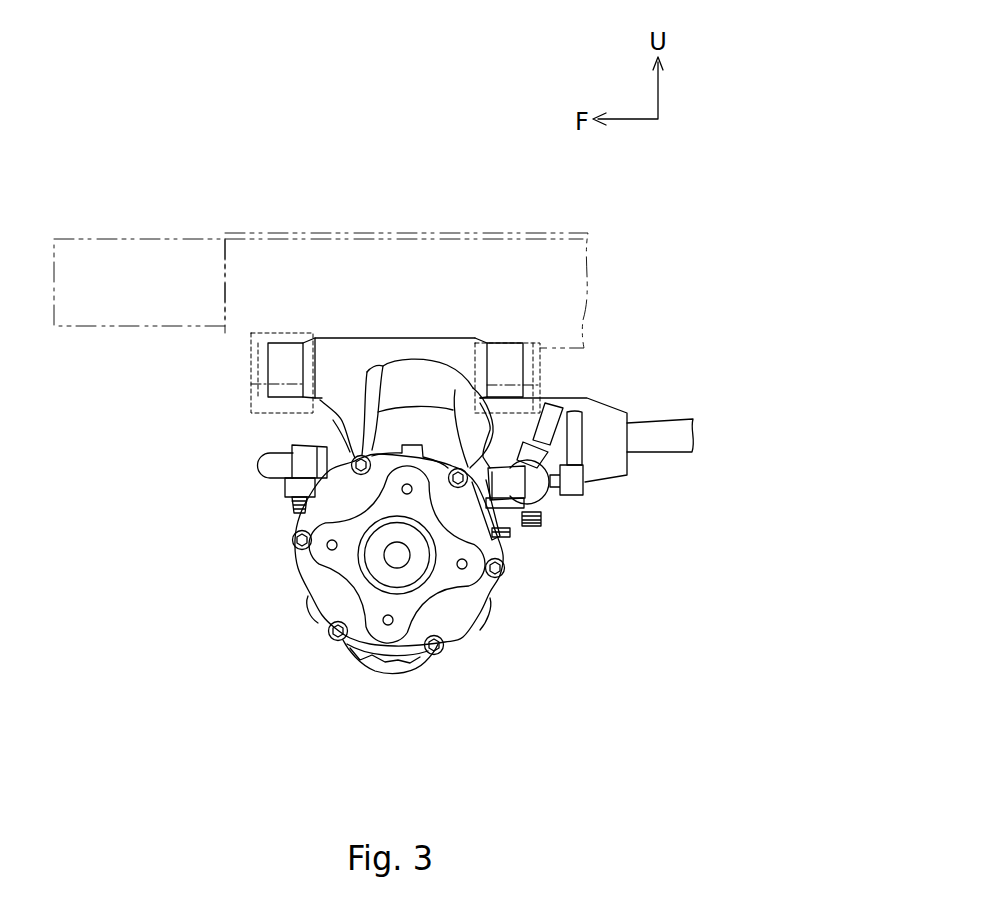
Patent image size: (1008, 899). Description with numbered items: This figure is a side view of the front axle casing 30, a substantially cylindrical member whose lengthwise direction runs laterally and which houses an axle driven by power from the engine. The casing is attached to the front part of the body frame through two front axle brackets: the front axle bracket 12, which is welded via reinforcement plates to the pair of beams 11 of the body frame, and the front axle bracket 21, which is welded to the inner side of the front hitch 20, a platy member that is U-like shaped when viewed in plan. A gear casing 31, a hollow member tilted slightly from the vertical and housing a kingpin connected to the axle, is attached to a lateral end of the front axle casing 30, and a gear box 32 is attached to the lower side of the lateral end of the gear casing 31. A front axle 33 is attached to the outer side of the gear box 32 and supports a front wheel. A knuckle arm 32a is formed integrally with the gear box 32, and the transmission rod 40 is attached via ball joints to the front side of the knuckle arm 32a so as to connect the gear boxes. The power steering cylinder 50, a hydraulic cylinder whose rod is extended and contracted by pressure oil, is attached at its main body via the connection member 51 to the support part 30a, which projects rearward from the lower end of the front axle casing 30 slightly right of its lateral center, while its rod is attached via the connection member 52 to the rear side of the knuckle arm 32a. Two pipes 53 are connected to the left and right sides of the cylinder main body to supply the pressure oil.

The front hitch 20 is at (170, 238).
The beams 11 is at (494, 232).
The front axle bracket 21 is at (250, 360).
The front axle bracket 12 is at (540, 366).
The front axle casing 30 is at (430, 338).
The gear casing 31 is at (390, 426).
The gear box 32 is at (312, 558).
The front axle 33 is at (388, 630).
The transmission rod 40 is at (267, 466).
The knuckle arm 32a is at (293, 487).
The pipes 53 is at (548, 420).
The power steering cylinder 50 is at (542, 480).
The support part 30a is at (550, 503).
The connection member 51 is at (532, 527).
The connection member 52 is at (508, 533).